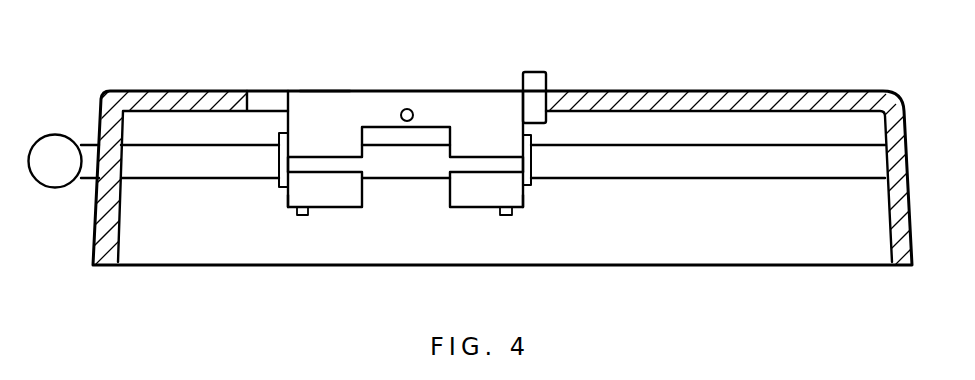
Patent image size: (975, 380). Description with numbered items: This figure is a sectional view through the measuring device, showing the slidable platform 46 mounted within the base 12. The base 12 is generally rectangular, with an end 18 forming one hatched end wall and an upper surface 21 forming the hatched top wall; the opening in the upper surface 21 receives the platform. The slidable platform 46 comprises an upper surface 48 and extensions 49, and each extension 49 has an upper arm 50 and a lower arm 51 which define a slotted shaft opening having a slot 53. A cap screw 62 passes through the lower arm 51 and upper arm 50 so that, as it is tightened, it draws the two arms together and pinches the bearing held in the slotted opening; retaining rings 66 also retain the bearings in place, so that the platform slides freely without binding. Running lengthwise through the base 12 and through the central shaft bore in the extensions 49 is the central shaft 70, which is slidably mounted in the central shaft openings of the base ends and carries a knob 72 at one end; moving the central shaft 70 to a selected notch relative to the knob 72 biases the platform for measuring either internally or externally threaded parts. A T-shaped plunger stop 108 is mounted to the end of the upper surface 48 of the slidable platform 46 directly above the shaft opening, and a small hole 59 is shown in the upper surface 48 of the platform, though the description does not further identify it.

The base 12 is at (573, 80).
The end 18 is at (97, 227).
The upper surface 21 is at (640, 92).
The slidable platform 46 is at (325, 80).
The upper surface 48 is at (368, 91).
The extensions 49 is at (287, 203).
The upper arm 50 is at (362, 147).
The lower arm 51 is at (362, 197).
The slot 53 is at (318, 163).
The hole 59 is at (410, 109).
The cap screw 62 is at (302, 217).
The retaining rings 66 is at (283, 187).
The central shaft 70 is at (625, 170).
The knob 72 is at (45, 135).
The T-shaped plunger stops 108 is at (533, 72).